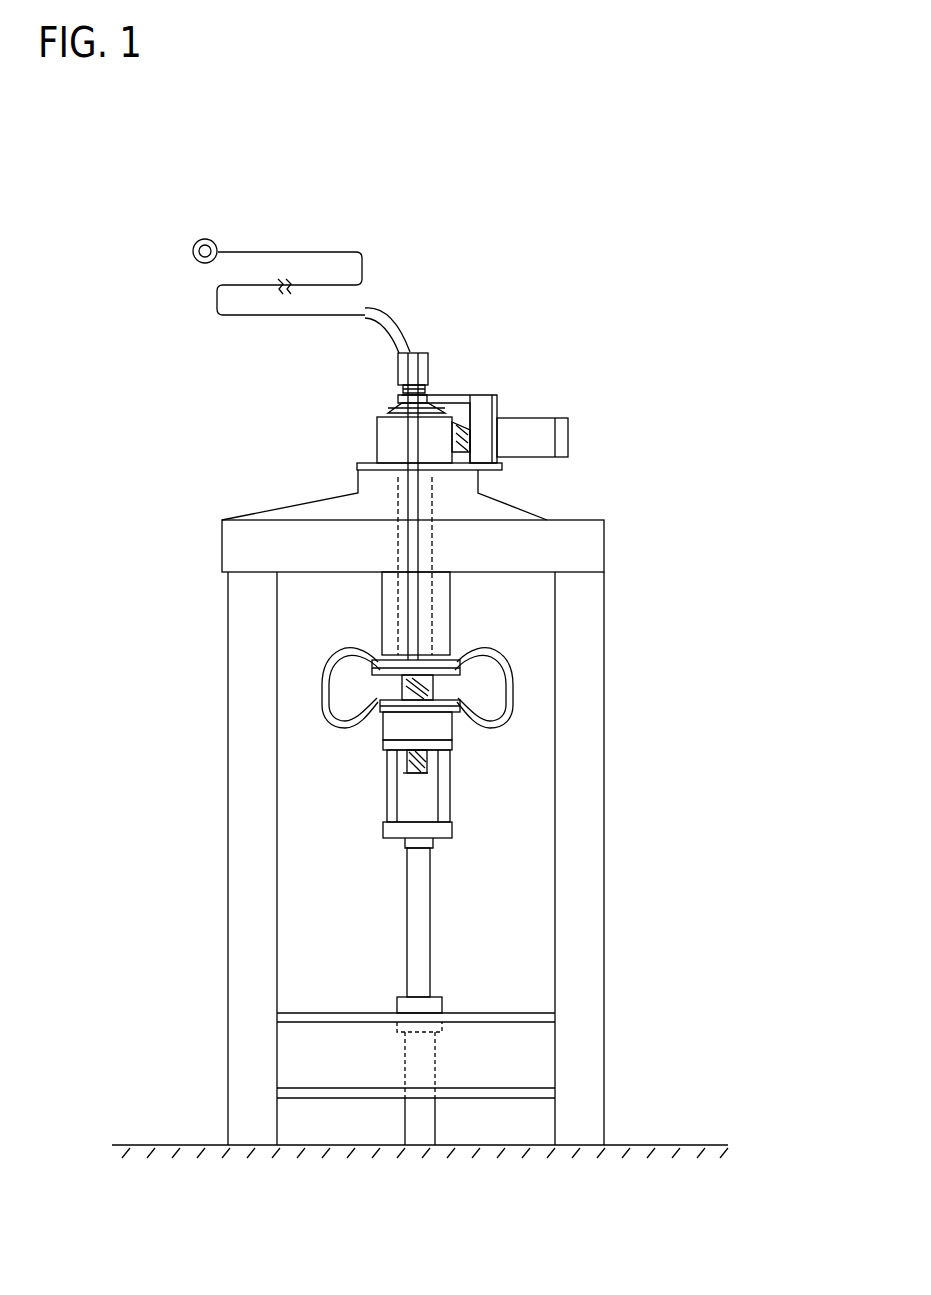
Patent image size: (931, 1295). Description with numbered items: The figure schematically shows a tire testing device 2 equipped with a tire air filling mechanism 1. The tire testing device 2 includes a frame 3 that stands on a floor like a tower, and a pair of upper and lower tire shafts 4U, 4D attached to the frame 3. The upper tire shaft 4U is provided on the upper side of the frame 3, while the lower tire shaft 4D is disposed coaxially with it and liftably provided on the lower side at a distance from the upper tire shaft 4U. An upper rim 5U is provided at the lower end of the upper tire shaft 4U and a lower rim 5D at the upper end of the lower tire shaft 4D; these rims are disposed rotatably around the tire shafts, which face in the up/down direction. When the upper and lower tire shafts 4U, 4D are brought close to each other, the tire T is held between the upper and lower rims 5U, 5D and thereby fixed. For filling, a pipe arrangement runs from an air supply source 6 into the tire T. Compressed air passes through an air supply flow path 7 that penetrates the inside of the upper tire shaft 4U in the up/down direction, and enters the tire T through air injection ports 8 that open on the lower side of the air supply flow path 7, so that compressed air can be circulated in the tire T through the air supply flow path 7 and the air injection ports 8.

The tire air filling mechanism 1 is at (456, 654).
The tire testing device 2 is at (579, 281).
The frame 3 is at (591, 615).
The upper tire shaft 4U is at (383, 598).
The lower tire shaft 4D is at (430, 922).
The upper rim 5U is at (382, 652).
The lower rim 5D is at (375, 713).
The air supply source 6 is at (205, 238).
The air supply flow path 7 is at (365, 262).
The air injection ports 8 is at (387, 762).
The tire T is at (322, 690).